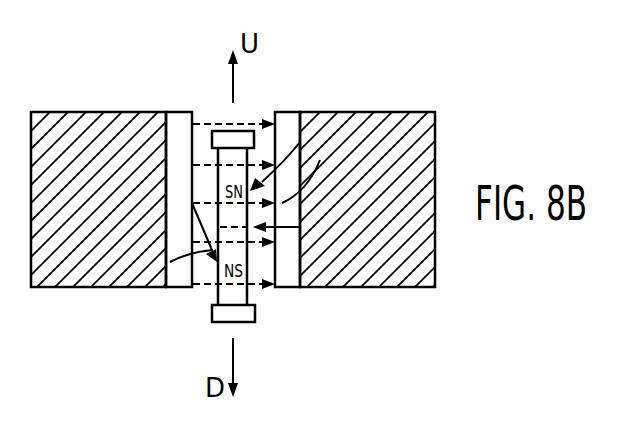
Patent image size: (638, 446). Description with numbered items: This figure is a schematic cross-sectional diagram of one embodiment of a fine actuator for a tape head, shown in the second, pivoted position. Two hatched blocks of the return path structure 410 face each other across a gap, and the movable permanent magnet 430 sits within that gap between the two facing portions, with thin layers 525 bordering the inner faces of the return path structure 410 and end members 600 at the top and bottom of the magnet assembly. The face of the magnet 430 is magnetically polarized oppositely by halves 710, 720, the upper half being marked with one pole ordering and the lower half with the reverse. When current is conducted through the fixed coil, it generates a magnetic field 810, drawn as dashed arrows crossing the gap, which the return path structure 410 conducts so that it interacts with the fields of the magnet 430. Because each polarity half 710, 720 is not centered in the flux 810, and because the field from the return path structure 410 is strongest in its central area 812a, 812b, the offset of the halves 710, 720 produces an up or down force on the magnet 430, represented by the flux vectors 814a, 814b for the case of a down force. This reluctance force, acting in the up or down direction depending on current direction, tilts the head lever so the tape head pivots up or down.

The return path structure 410 is at (80, 120).
The gap layer 525 is at (177, 123).
The end member of rotor 600 is at (247, 130).
The polarity half of the magnet 710 is at (226, 160).
The polarity half of the magnet 720 is at (222, 293).
The magnetic field 810 is at (223, 125).
The permanent magnet 430 is at (300, 227).
The central area of the return path structure 812a is at (192, 203).
The flux vector 814a is at (170, 262).
The central area of the return path structure 812b is at (320, 160).
The flux vector 814b is at (300, 142).